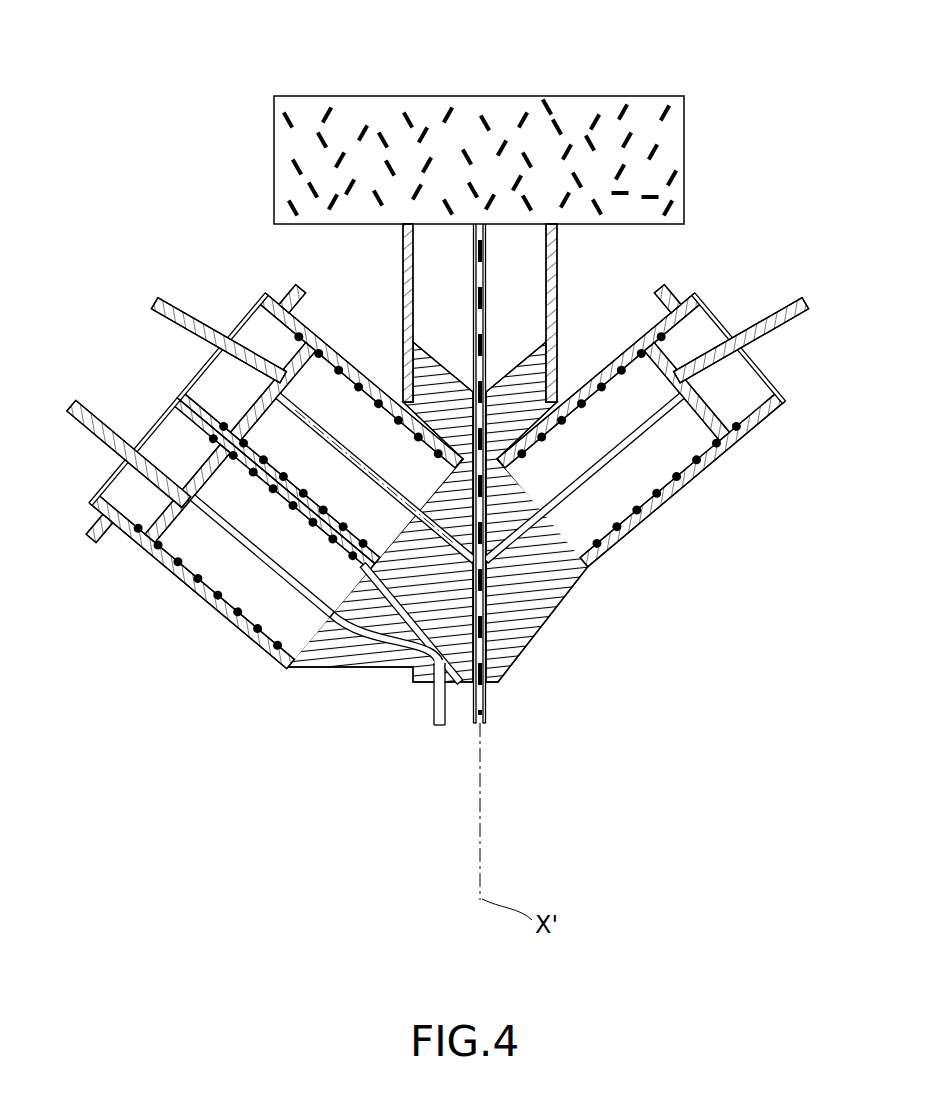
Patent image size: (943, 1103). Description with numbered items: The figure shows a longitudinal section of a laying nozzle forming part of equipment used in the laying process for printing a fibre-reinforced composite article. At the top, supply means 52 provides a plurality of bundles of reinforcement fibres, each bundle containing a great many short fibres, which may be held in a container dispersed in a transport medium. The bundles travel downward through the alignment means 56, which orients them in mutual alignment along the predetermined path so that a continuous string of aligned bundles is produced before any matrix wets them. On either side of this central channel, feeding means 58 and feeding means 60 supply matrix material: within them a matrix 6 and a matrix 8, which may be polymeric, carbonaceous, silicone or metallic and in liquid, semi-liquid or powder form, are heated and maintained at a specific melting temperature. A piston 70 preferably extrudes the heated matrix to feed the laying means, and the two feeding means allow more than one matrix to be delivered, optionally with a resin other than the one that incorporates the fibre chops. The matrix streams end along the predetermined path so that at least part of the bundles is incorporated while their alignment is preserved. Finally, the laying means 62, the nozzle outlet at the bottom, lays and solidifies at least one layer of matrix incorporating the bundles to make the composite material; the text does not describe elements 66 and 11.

The supply means 52 is at (248, 162).
The feeding means 60 is at (136, 380).
The matrix 6 is at (310, 395).
The piston 70 is at (742, 393).
The feeding means 58 is at (724, 488).
The matrix 8 is at (626, 481).
The alignment means 56 is at (508, 588).
The laying means 62 is at (494, 691).
The connection pipe 66 is at (440, 596).
The outlet pipe 11 is at (440, 730).